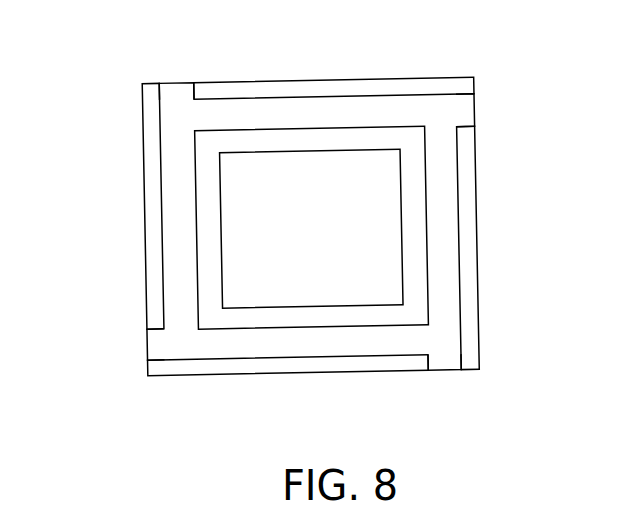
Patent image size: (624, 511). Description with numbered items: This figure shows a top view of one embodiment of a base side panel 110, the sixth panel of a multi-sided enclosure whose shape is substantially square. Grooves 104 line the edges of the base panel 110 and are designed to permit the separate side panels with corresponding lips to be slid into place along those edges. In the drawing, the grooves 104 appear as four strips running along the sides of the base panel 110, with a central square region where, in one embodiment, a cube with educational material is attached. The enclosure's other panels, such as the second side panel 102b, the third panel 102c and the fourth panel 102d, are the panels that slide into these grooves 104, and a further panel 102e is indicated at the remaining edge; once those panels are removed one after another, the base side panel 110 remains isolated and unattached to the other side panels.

The second side panel 102b is at (138, 344).
The third panel 102c is at (446, 376).
The fourth panel 102d is at (492, 109).
The gap in outer conductive ring 102e is at (175, 73).
The grooves 104 is at (333, 113).
The base side panel 110 is at (331, 238).